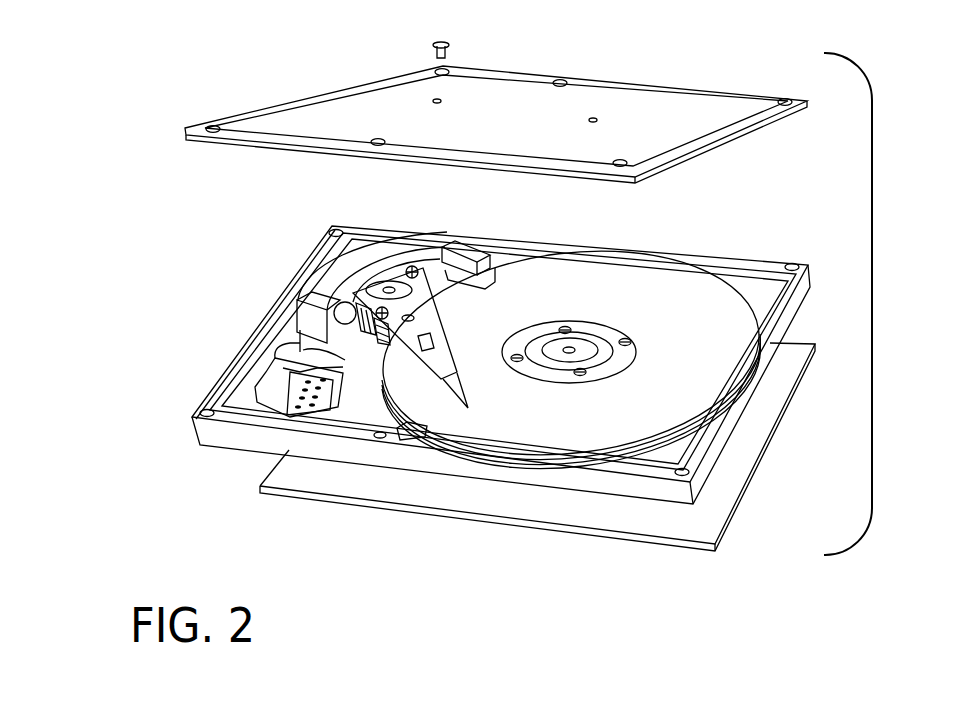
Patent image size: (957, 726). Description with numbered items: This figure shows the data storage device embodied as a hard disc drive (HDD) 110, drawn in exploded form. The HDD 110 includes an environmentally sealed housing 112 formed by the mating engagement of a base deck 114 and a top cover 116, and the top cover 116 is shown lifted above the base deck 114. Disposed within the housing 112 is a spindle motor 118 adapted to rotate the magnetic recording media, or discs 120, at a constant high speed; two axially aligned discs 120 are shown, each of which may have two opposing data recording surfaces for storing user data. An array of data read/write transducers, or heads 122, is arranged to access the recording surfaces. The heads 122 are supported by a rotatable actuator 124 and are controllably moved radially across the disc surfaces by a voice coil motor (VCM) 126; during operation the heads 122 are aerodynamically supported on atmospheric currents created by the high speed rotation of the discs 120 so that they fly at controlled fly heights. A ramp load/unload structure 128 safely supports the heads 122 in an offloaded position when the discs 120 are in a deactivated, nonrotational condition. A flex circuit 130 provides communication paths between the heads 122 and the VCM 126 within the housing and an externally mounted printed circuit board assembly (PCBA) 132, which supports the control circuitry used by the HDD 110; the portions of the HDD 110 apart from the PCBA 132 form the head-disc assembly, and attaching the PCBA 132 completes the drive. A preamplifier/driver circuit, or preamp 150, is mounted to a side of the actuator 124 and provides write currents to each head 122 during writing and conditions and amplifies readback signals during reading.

The hard disc drive 110 is at (153, 19).
The housing 112 is at (226, 232).
The base deck 114 is at (745, 405).
The top cover 116 is at (590, 95).
The spindle motor 118 is at (580, 347).
The magnetic recording media (discs) 120 is at (632, 460).
The data read/write transducers (heads) 122 is at (470, 408).
The rotatable actuator 124 is at (448, 352).
The voice coil motor (VCM) 126 is at (381, 240).
The ramp load/unload structure 128 is at (413, 437).
The flex circuit 130 is at (298, 353).
The printed circuit board assembly (PCBA) 132 is at (266, 494).
The preamplifier/driver circuit (preamp) 150 is at (365, 335).